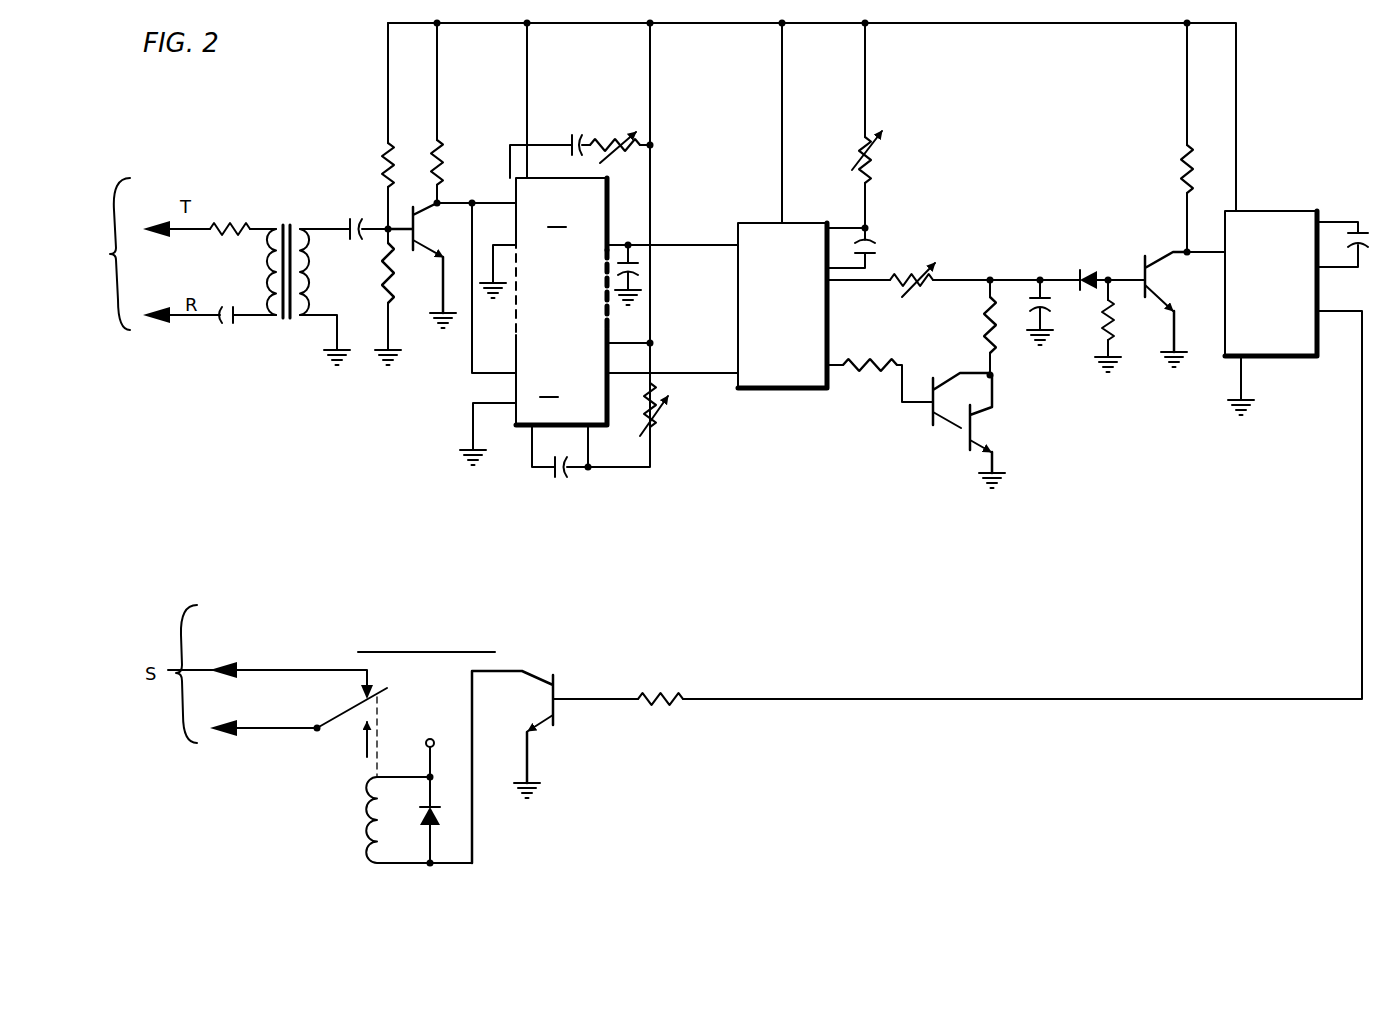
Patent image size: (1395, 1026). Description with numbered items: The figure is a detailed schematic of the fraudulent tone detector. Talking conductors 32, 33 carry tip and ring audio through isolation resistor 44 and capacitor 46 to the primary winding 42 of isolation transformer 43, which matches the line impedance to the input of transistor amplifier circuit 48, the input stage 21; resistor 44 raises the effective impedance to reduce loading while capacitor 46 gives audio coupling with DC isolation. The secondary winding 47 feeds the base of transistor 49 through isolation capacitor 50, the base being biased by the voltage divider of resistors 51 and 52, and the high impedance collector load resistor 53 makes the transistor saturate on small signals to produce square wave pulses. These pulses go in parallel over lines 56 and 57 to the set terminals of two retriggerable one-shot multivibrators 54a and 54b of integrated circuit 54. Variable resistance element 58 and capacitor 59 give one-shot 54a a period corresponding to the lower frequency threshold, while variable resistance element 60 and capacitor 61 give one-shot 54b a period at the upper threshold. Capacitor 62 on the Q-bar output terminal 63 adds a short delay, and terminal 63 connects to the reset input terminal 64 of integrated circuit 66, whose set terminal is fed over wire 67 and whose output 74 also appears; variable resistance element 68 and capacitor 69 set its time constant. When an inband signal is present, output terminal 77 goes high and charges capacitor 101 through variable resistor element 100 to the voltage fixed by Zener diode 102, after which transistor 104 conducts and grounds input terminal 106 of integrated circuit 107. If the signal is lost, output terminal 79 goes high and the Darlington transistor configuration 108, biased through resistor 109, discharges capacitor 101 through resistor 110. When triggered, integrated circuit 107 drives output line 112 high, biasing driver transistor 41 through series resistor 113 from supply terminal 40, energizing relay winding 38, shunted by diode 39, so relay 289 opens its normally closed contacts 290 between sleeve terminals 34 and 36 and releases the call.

The input amplifier stage 21 is at (404, 384).
The conductor 32 is at (152, 222).
The conductor 33 is at (158, 312).
The terminal 34 is at (240, 668).
The terminal 36 is at (229, 728).
The relay winding 38 is at (368, 831).
The diode 39 is at (443, 806).
The supply terminal 40 is at (430, 738).
The driver transistor 41 is at (557, 690).
The transformer primary winding 42 is at (264, 292).
The isolation transformer 43 is at (266, 248).
The isolation resistor 44 is at (231, 224).
The capacitor 46 is at (226, 328).
The secondary winding 47 is at (325, 313).
The transistor amplifier circuit 48 is at (417, 301).
The transistor 49 is at (422, 264).
The isolation capacitor 50 is at (355, 239).
The resistor 51 is at (384, 148).
The resistor 52 is at (383, 268).
The resistor 53 is at (441, 158).
The integrated circuit 54 is at (558, 224).
The one-shot multivibrator 54a is at (527, 244).
The one-shot multivibrator 54b is at (544, 376).
The line 56 is at (481, 203).
The line 57 is at (487, 377).
The variable resistance element 58 is at (613, 135).
The capacitor 59 is at (571, 142).
The variable resistance element 60 is at (662, 428).
The capacitor 61 is at (561, 483).
The capacitor 62 is at (643, 275).
The output terminal 63 is at (628, 243).
The reset input terminal 64 is at (720, 241).
The integrated circuit 66 is at (800, 228).
The wire 67 is at (728, 379).
The variable resistance element 68 is at (858, 145).
The capacitor 69 is at (880, 245).
The output lead 74 is at (657, 318).
The output terminal 77 is at (853, 283).
The output terminal 79 is at (833, 380).
The variable resistor element 100 is at (946, 262).
The capacitor 101 is at (1054, 309).
The Zener diode 102 is at (1081, 264).
The transistor 104 is at (1148, 261).
The input terminal 106 is at (1200, 250).
The integrated circuit 107 is at (1293, 343).
The Darlington transistor configuration 108 is at (956, 436).
The resistor 109 is at (858, 362).
The resistor 110 is at (987, 329).
The output line 112 is at (1362, 458).
The series resistor 113 is at (662, 690).
The relay 289 is at (273, 415).
The contacts 290 is at (325, 722).